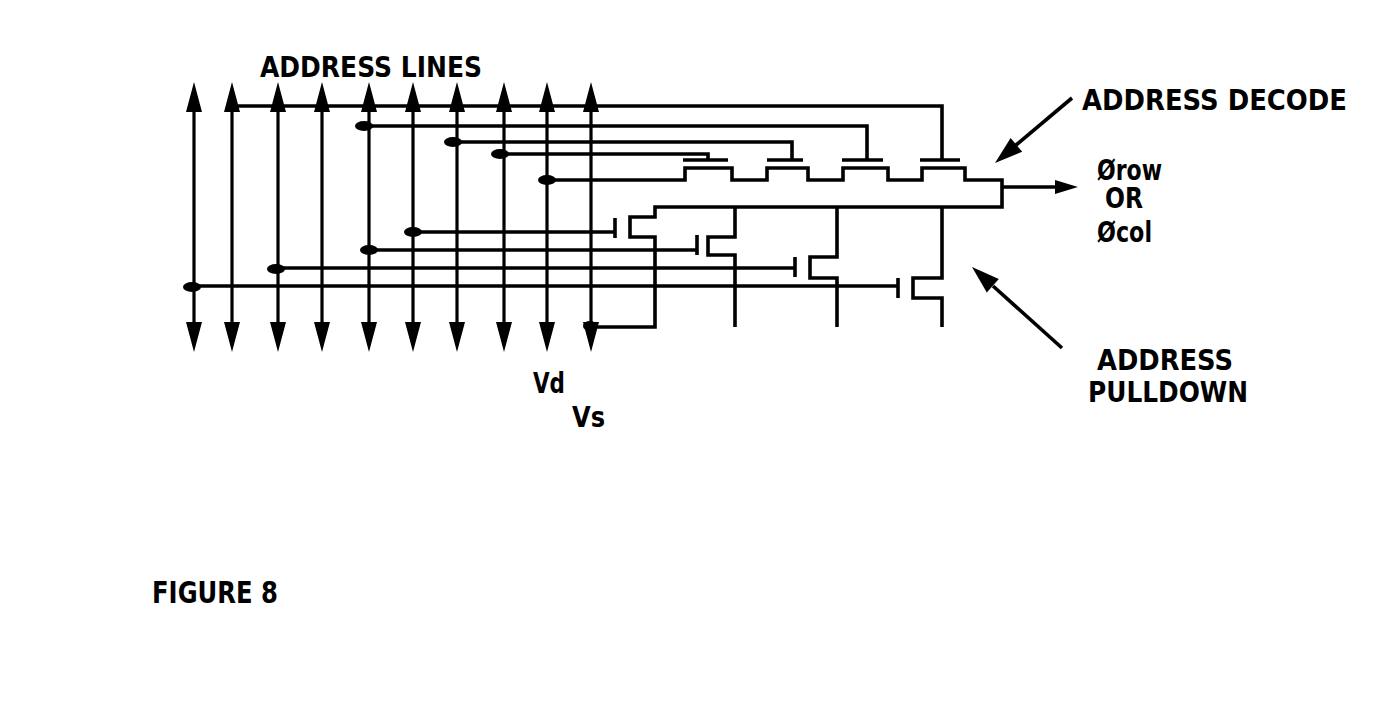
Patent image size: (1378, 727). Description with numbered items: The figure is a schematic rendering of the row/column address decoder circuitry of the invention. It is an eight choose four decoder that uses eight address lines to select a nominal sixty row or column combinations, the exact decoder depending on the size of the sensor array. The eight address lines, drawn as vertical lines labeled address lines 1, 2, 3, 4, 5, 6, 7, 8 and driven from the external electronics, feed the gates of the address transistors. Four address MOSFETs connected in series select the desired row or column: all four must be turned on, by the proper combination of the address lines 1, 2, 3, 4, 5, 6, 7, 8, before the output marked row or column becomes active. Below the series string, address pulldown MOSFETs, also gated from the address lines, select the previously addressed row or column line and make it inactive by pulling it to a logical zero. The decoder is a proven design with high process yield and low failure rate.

The address line ØA1 1 is at (188, 241).
The address line ØA2 2 is at (224, 258).
The address line ØA3 3 is at (269, 241).
The address line ØA4 4 is at (314, 258).
The address line ØA5 5 is at (361, 241).
The address line ØA6 6 is at (411, 258).
The address line ØA7 7 is at (455, 241).
The address line ØA8 8 is at (495, 258).